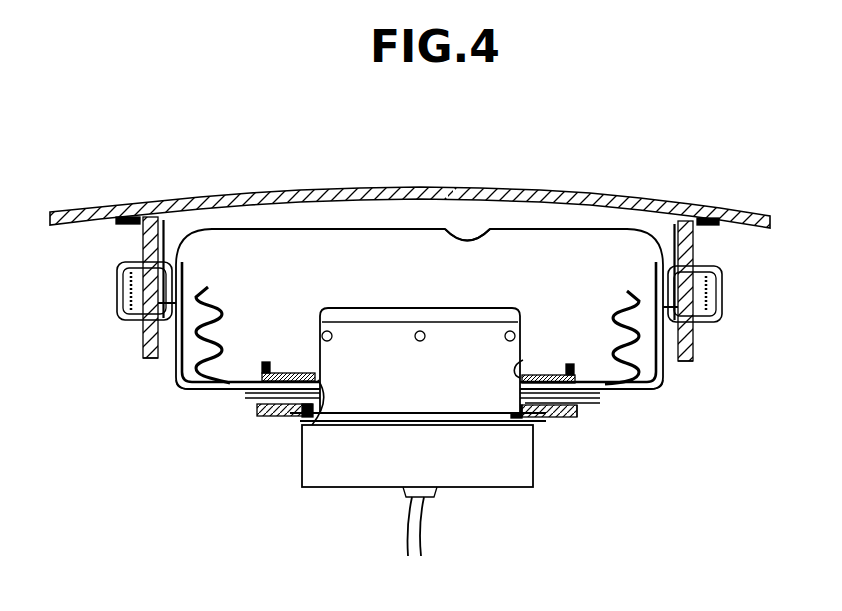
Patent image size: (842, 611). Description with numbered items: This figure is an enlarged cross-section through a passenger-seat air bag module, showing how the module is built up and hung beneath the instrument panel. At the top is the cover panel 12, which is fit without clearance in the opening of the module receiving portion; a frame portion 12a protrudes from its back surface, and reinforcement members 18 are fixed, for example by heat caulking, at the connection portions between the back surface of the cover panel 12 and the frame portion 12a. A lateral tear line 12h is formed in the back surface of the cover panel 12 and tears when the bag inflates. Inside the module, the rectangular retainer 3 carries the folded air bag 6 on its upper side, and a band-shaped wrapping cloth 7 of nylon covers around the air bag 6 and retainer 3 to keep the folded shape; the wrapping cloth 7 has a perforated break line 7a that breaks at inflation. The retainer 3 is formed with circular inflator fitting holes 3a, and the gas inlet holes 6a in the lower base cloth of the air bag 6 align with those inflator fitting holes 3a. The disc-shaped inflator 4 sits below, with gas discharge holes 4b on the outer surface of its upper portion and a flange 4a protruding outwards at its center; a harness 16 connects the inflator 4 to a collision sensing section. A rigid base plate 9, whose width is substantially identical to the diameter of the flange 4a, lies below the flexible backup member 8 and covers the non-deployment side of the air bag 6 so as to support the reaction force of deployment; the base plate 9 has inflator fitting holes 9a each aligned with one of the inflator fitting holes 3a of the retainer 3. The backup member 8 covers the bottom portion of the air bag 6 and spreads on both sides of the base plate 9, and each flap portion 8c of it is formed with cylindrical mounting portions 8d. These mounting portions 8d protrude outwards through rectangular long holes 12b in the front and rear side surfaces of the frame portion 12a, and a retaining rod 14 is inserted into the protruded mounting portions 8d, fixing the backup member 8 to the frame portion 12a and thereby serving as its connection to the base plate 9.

The retainer 3 is at (290, 371).
The inflator fitting holes 3a is at (523, 360).
The inflator 4 is at (536, 458).
The flange 4a is at (546, 422).
The gas discharge holes 4b is at (510, 331).
The air bag 6 is at (208, 288).
The gas inlet holes 6a is at (305, 419).
The wrapping cloth 7 is at (305, 227).
The break line 7a is at (491, 242).
The backup member 8 is at (188, 393).
The flap portion 8c is at (176, 380).
The cylindrical mounting portions 8d is at (118, 316).
The base plate 9 is at (578, 410).
The inflator fitting holes 9a is at (498, 418).
The cover panel 12 is at (600, 193).
The frame portion 12a is at (695, 343).
The long holes 12b is at (693, 252).
The lateral tear line 12h is at (450, 188).
The retaining rod 14 is at (118, 291).
The harness 16 is at (425, 530).
The reinforcement members 18 is at (137, 225).